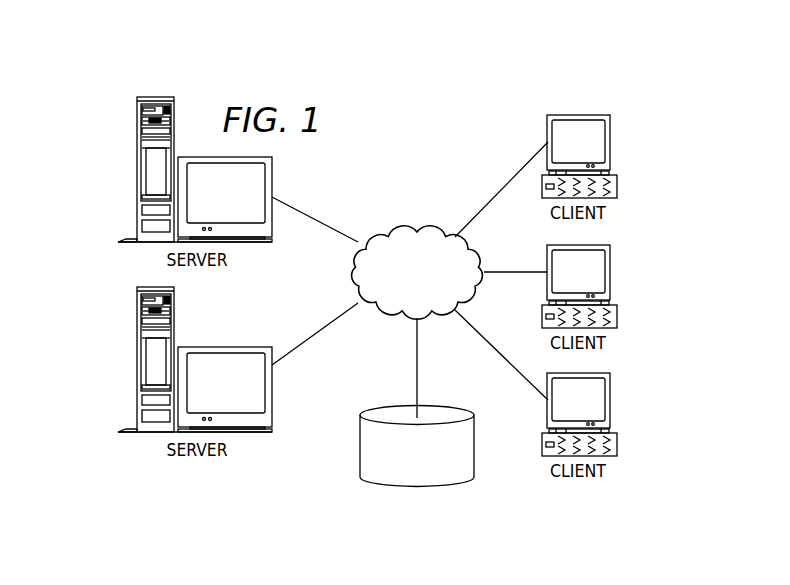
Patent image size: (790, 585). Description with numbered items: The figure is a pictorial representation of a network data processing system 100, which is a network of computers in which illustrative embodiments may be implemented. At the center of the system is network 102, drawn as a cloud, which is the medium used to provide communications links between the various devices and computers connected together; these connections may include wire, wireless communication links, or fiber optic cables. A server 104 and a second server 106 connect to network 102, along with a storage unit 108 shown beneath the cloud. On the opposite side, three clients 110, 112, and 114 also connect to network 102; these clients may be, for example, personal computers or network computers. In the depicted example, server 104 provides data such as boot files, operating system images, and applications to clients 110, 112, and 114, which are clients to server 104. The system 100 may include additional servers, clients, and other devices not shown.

The network data processing system 100 is at (462, 125).
The network 102 is at (393, 227).
The server 104 is at (137, 170).
The server 106 is at (137, 360).
The storage unit 108 is at (403, 486).
The client 110 is at (611, 143).
The client 112 is at (611, 273).
The client 114 is at (611, 400).